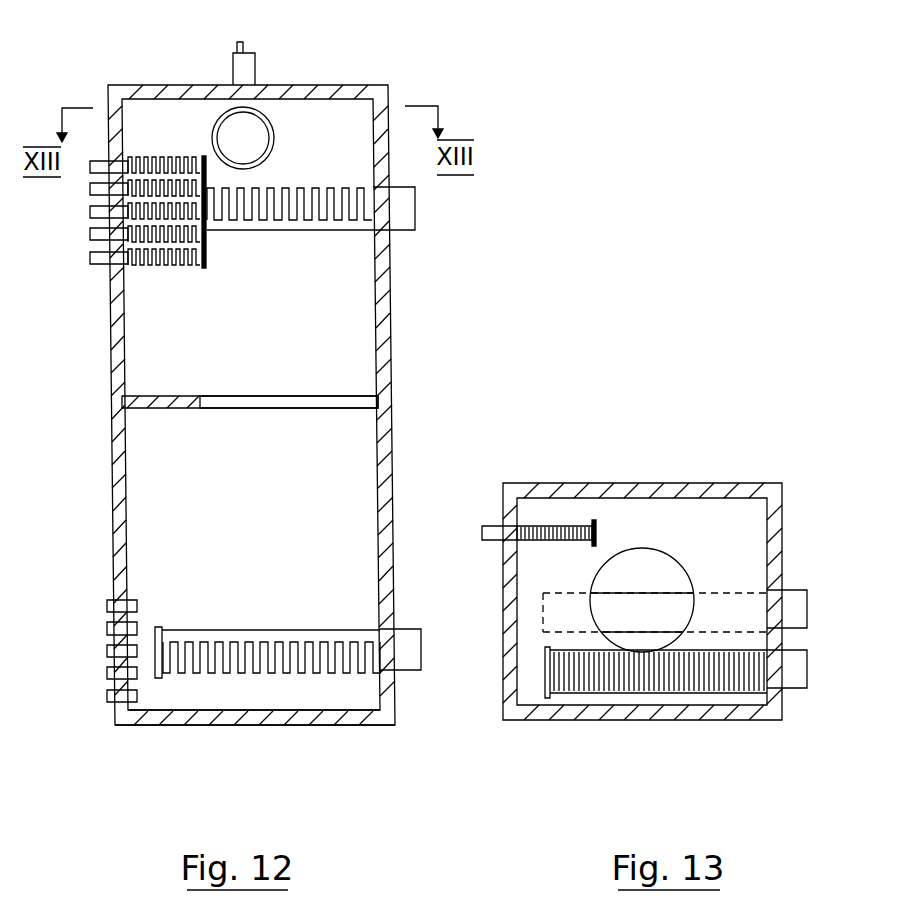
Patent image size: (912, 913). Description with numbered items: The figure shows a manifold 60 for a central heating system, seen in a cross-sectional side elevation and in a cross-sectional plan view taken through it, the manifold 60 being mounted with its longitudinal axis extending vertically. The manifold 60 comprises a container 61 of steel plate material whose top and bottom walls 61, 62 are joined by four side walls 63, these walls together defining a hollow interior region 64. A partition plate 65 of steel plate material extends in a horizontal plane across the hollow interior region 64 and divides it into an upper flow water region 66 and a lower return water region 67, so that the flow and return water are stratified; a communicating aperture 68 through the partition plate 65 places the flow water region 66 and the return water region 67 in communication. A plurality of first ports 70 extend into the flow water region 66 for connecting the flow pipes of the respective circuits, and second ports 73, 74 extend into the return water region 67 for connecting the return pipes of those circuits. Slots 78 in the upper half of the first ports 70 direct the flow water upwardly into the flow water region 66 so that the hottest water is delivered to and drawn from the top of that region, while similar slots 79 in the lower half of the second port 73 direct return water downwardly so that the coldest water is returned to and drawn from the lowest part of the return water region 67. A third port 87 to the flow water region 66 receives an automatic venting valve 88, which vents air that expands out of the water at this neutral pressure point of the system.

In FIG. 12, the manifold 60 is at (418, 399).
In FIG. 13, the manifold 60 is at (812, 529).
In FIG. 12, the container 61 is at (360, 85).
In FIG. 13, the container 61 is at (642, 601).
In FIG. 12, the bottom wall 62 is at (238, 725).
In FIG. 12, the side walls 63 is at (392, 450).
In FIG. 13, the side walls 63 is at (687, 483).
In FIG. 12, the hollow interior region 64 is at (363, 355).
In FIG. 13, the hollow interior region 64 is at (560, 503).
In FIG. 12, the partition plate 65 is at (147, 397).
In FIG. 13, the partition plate 65 is at (714, 525).
In FIG. 12, the flow water region 66 is at (340, 280).
In FIG. 13, the flow water region 66 is at (752, 520).
In FIG. 12, the return water region 67 is at (342, 577).
In FIG. 12, the communicating aperture 68 is at (252, 397).
In FIG. 13, the communicating aperture 68 is at (657, 553).
In FIG. 12, the first ports 70 is at (92, 165).
In FIG. 13, the first ports 70 is at (483, 526).
In FIG. 12, the second port 73 is at (410, 630).
In FIG. 13, the second port 73 is at (797, 605).
In FIG. 12, the second ports 74 is at (110, 602).
In FIG. 12, the slots 78 is at (163, 157).
In FIG. 13, the slots 78 is at (540, 526).
In FIG. 12, the slots 79 is at (185, 673).
In FIG. 12, the third port 87 is at (260, 84).
In FIG. 12, the automatic venting valve 88 is at (254, 62).